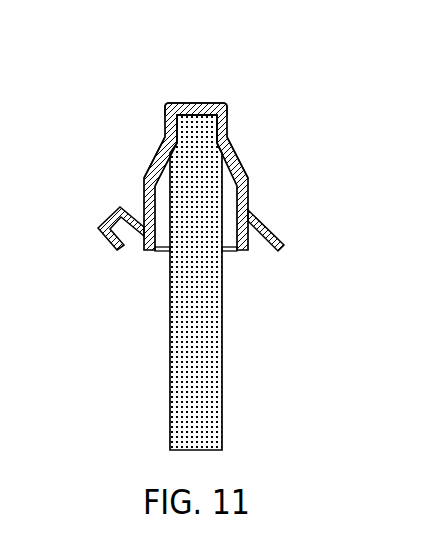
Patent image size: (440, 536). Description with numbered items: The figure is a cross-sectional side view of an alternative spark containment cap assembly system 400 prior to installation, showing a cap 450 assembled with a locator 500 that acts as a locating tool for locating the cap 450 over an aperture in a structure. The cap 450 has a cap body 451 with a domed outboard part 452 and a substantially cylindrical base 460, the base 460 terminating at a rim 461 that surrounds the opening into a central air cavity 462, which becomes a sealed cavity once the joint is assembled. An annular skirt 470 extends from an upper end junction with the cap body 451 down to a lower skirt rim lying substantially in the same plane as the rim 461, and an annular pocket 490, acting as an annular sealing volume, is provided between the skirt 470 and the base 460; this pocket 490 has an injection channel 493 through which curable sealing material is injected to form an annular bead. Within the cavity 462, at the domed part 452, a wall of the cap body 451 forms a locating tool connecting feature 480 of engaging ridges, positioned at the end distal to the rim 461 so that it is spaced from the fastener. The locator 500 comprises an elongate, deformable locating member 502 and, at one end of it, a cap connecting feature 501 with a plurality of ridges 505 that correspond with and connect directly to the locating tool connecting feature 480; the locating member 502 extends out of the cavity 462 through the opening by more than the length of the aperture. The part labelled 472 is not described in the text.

The spark containment cap assembly system 400 is at (246, 66).
The cap 450 is at (139, 62).
The locator 500 is at (140, 356).
The cap connecting feature 501 is at (229, 108).
The ridges 505 is at (166, 112).
The domed outboard part 452 is at (149, 143).
The locating tool connecting feature 480 is at (224, 135).
The cap body 451 is at (146, 172).
The central air cavity 462 is at (247, 175).
The injection channel 493 is at (106, 220).
The annular skirt 470 is at (268, 229).
The end of left arm 472 is at (114, 251).
The base 460 is at (252, 237).
The annular pocket 490 is at (137, 243).
The rim 461 is at (242, 252).
The locating member 502 is at (224, 318).